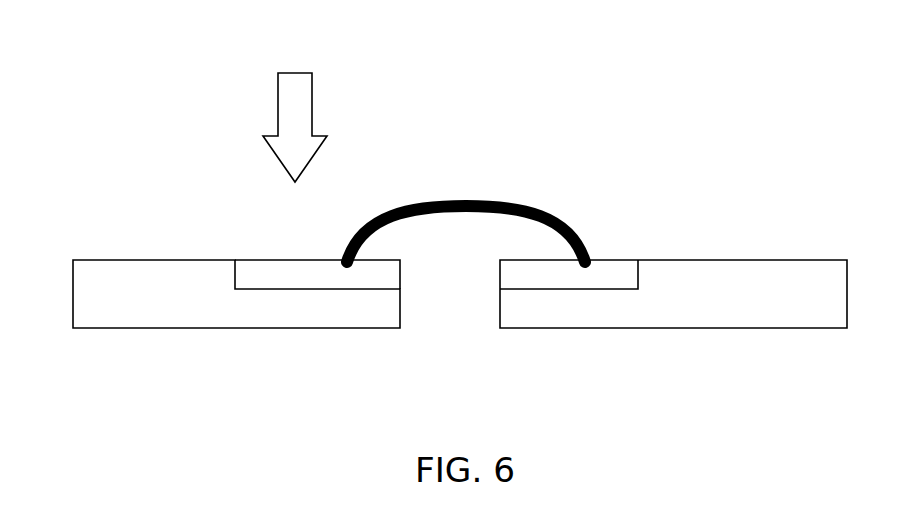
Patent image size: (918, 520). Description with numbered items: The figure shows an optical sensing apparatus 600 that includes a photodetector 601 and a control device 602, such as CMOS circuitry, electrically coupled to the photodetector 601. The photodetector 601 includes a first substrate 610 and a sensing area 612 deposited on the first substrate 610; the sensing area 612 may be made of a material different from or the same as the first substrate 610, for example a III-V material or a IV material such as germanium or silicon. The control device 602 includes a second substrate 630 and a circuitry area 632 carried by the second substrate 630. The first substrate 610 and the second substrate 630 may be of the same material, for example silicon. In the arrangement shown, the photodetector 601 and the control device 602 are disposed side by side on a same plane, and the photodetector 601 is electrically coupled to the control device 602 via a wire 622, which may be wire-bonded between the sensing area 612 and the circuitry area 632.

The optical sensing apparatus 600 is at (60, 40).
The photodetector 601 is at (118, 316).
The control device 602 is at (827, 317).
The first substrate 610 is at (188, 316).
The sensing area 612 is at (256, 272).
The wire 622 is at (458, 200).
The second substrate 630 is at (672, 306).
The circuitry area 632 is at (609, 274).